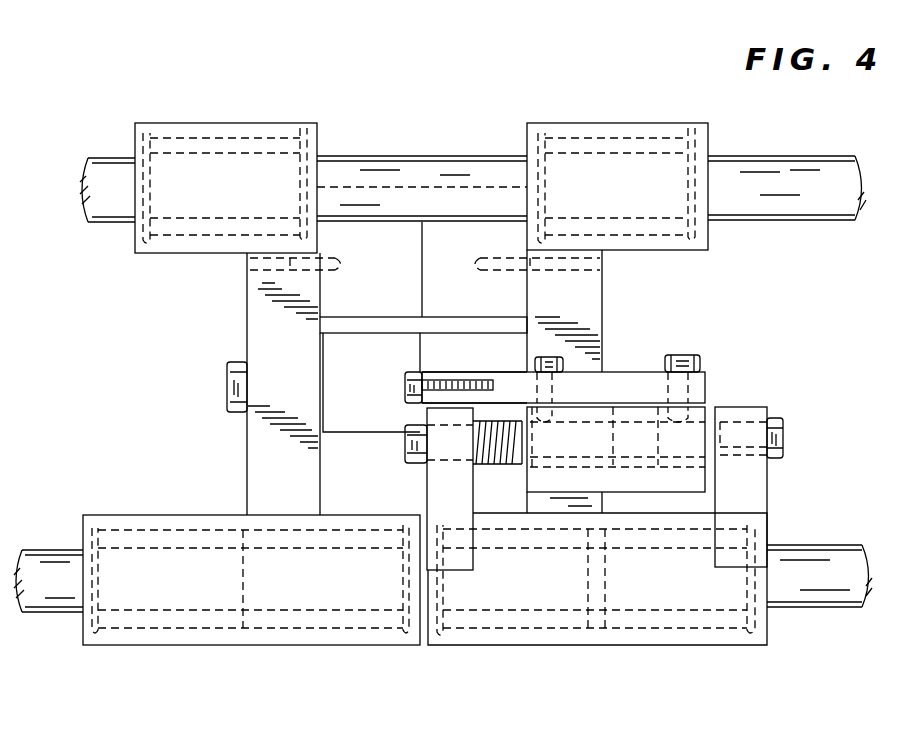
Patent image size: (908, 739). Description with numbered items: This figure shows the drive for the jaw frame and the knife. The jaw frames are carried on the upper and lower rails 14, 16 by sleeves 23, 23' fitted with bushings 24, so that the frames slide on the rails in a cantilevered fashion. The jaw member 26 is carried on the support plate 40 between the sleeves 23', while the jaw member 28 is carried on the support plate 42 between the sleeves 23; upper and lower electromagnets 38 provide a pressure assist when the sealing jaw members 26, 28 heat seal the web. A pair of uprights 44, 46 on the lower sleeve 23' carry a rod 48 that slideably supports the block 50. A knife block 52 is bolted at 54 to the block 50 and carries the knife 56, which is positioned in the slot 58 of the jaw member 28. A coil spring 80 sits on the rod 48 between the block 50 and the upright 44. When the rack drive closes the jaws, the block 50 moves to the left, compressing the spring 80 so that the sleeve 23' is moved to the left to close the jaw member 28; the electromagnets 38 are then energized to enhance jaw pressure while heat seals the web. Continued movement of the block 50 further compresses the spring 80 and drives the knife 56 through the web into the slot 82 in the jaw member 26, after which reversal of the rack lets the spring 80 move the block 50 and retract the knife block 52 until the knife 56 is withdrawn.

The upper rail 14 is at (775, 170).
The lower rail 16 is at (818, 597).
The sleeve 23 is at (251, 409).
The sleeve 23' is at (597, 391).
The bushing 24 is at (215, 143).
The jaw member 26 is at (333, 355).
The jaw member 28 is at (478, 345).
The electromagnet 38 is at (390, 235).
The support plate 40 is at (262, 288).
The support plate 42 is at (588, 281).
The upright 44 is at (432, 488).
The upright 46 is at (758, 488).
The rod 48 is at (768, 412).
The block 50 is at (688, 440).
The knife block 52 is at (640, 372).
The bolt 54 is at (700, 357).
The knife 56 is at (445, 380).
The slot 58 is at (420, 392).
The coil spring 80 is at (500, 462).
The slot 82 is at (405, 385).